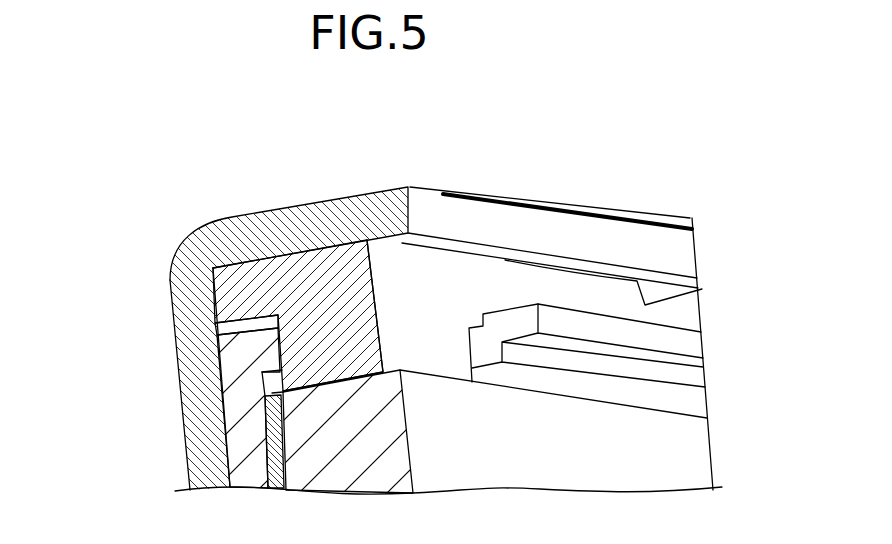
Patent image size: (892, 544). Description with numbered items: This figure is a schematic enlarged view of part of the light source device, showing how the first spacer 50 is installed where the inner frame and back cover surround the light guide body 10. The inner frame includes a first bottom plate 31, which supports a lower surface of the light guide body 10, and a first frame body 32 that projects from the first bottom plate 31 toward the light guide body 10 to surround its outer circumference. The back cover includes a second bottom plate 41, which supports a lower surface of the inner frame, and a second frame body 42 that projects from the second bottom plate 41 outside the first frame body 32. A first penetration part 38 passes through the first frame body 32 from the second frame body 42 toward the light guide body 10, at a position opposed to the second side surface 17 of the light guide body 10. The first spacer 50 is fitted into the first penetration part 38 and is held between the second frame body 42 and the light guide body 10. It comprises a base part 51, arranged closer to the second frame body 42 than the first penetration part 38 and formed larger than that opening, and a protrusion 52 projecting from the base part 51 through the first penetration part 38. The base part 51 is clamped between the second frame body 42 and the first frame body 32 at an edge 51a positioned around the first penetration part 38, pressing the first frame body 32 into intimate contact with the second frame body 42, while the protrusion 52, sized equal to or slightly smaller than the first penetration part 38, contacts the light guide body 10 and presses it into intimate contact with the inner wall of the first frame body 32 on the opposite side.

The light guide body 10 is at (676, 430).
The second side surface 17 is at (335, 382).
The first bottom plate 31 is at (238, 442).
The first frame body 32 is at (600, 327).
The first penetration part 38 is at (503, 325).
The second bottom plate 41 is at (192, 412).
The second frame body 42 is at (298, 222).
The first spacer 50 is at (98, 280).
The base part 51 is at (232, 298).
The edge 51a is at (622, 302).
The protrusion 52 is at (293, 347).